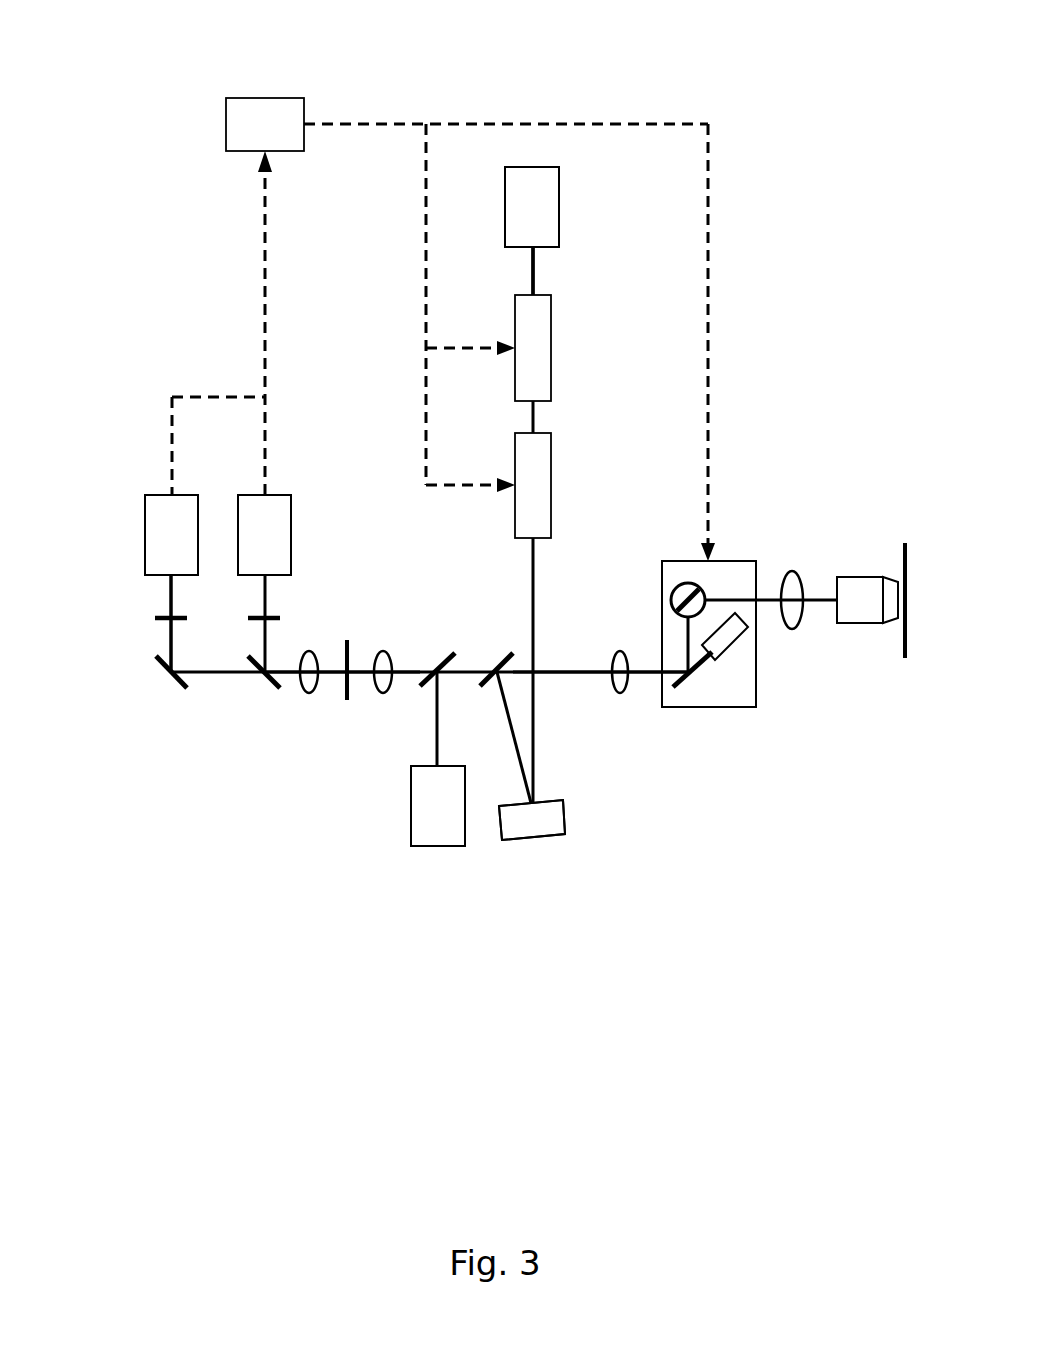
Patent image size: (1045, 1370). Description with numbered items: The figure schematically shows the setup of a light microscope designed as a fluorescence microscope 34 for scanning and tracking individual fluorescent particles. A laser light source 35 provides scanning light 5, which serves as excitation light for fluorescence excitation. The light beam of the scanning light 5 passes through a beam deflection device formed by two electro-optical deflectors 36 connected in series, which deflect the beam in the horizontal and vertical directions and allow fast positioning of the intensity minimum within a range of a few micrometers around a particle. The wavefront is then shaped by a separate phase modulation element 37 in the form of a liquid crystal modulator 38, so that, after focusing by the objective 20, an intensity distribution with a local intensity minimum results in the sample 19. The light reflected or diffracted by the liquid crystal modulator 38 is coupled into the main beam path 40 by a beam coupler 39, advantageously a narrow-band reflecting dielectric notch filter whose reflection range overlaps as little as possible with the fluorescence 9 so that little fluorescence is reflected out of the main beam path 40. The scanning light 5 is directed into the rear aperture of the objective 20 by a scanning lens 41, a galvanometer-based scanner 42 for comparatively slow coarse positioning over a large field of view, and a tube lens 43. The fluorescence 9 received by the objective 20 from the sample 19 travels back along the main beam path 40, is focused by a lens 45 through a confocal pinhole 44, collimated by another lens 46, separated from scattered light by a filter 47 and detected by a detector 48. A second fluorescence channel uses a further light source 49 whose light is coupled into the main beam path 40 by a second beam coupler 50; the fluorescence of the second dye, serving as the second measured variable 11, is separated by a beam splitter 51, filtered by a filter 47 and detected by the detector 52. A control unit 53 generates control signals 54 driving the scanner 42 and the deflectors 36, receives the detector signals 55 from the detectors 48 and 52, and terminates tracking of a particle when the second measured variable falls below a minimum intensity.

The fluorescence microscope 34 is at (140, 219).
The control unit 53 is at (245, 98).
The control signals 54 is at (428, 190).
The detector signals 55 is at (260, 350).
The laser light source 35 is at (563, 203).
The scanning light 5 is at (540, 275).
The electro-optical deflectors 36 is at (553, 365).
The detector 52 is at (158, 492).
The detector 48 is at (282, 492).
The second measured variable 11 is at (167, 602).
The fluorescence 9 is at (268, 598).
The filter 47 is at (245, 618).
The beam splitter 51 is at (270, 682).
The lens 46 is at (310, 695).
The confocal pinhole 44 is at (348, 702).
The lens 45 is at (385, 700).
The second beam coupler 50 is at (442, 660).
The further light source 49 is at (433, 848).
The beam coupler 39 is at (503, 653).
The phase modulation element 37 is at (537, 840).
The liquid crystal modulator 38 is at (532, 820).
The scanning lens 41 is at (620, 650).
The main beam path 40 is at (577, 675).
The scanner 42 is at (713, 712).
The tube lens 43 is at (793, 632).
The objective 20 is at (847, 572).
The sample 19 is at (903, 540).